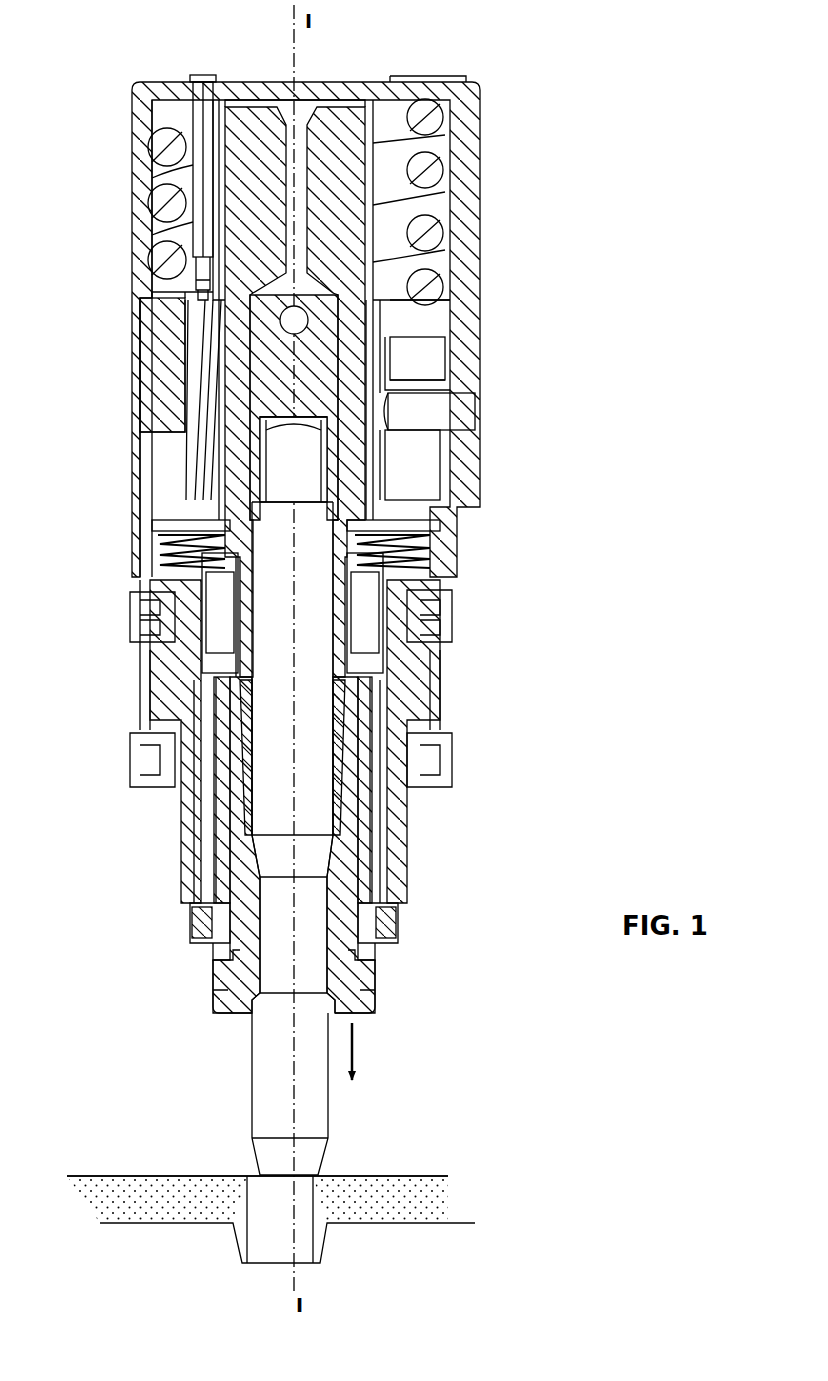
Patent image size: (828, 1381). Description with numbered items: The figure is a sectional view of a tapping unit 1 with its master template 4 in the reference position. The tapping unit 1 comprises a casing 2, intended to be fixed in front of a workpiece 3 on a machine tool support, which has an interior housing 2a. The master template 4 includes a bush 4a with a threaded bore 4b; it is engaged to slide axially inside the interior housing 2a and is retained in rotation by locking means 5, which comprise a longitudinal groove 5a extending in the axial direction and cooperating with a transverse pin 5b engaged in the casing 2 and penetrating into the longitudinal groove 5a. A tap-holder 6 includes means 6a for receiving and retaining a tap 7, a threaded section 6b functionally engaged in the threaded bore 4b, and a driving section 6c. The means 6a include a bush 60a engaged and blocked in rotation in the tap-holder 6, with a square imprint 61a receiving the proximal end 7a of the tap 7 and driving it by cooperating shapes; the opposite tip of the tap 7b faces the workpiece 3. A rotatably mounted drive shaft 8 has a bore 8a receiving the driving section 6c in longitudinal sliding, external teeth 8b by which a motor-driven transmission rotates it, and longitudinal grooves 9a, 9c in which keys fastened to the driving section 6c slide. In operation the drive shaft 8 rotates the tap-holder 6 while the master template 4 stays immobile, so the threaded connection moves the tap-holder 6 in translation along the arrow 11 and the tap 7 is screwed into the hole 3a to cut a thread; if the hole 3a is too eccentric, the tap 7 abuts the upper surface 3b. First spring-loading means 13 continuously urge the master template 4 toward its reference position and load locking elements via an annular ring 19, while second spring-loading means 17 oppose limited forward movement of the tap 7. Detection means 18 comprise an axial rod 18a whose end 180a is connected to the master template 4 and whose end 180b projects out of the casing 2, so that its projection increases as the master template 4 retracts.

The tapping unit 1 is at (518, 602).
The casing 2 is at (481, 186).
The interior housing 2a is at (438, 238).
The workpiece 3 is at (452, 1200).
The hole 3a is at (267, 1240).
The upper surface 3b is at (380, 1176).
The master template 4 is at (188, 497).
The bush 4a is at (205, 465).
The threaded bore 4b is at (385, 512).
The locking means 5 is at (392, 481).
The longitudinal groove 5a is at (378, 489).
The transverse pin 5b is at (457, 413).
The tap-holder 6 is at (236, 388).
The means for receiving and retaining the tap 6a is at (262, 354).
The threaded section 6b is at (205, 242).
The driving section 6c is at (215, 680).
The tap 7 is at (272, 712).
The proximal end of the tap 7a is at (280, 437).
The plunger tip 7b is at (262, 1110).
The drive shaft 8 is at (410, 810).
The bore 8a is at (212, 830).
The external teeth 8b is at (438, 690).
The longitudinal groove 9a is at (382, 835).
The longitudinal groove 9c is at (205, 885).
The arrow 11 is at (353, 1046).
The first spring-loading means 13 is at (436, 156).
The second spring-loading means 17 is at (158, 550).
The detection means 18 is at (230, 74).
The axial rod 18a is at (200, 170).
The annular ring 19 is at (442, 307).
The bush 60a is at (294, 407).
The imprint 61a is at (413, 446).
The end of the axial rod 180a is at (203, 293).
The end of the axial rod 180b is at (200, 78).